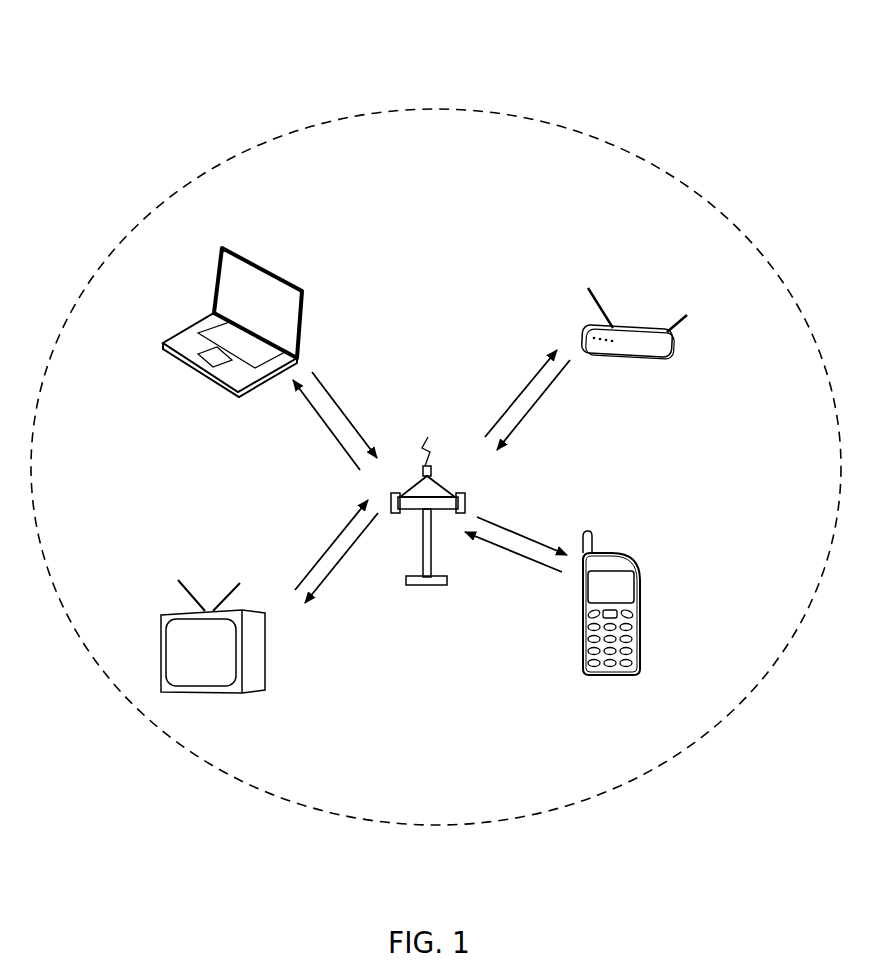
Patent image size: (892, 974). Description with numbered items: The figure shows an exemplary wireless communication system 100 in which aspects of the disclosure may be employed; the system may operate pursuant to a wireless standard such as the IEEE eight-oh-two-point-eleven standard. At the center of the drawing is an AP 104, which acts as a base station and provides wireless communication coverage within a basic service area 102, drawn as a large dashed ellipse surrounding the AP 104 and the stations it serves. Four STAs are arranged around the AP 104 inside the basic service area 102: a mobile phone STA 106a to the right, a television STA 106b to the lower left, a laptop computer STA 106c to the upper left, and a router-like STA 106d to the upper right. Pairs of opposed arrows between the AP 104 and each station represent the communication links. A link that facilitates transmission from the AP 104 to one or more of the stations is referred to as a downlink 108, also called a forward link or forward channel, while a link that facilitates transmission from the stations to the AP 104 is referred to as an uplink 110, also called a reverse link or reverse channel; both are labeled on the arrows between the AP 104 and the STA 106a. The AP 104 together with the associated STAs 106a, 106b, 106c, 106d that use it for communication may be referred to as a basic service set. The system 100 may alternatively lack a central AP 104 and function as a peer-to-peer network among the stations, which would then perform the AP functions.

The wireless communication system 100 is at (702, 86).
The basic service area 102 is at (778, 278).
The AP 104 is at (428, 497).
The STA 106a is at (612, 552).
The STA 106b is at (257, 612).
The STA 106c is at (227, 247).
The STA 106d is at (646, 325).
The downlink 108 is at (510, 520).
The uplink 110 is at (467, 553).